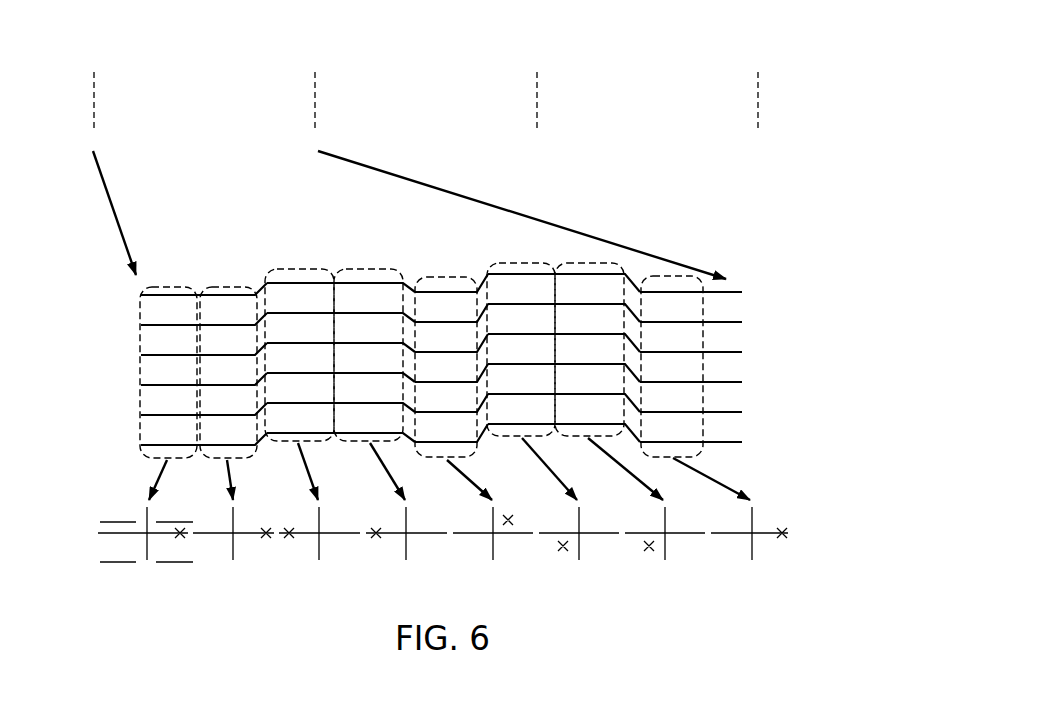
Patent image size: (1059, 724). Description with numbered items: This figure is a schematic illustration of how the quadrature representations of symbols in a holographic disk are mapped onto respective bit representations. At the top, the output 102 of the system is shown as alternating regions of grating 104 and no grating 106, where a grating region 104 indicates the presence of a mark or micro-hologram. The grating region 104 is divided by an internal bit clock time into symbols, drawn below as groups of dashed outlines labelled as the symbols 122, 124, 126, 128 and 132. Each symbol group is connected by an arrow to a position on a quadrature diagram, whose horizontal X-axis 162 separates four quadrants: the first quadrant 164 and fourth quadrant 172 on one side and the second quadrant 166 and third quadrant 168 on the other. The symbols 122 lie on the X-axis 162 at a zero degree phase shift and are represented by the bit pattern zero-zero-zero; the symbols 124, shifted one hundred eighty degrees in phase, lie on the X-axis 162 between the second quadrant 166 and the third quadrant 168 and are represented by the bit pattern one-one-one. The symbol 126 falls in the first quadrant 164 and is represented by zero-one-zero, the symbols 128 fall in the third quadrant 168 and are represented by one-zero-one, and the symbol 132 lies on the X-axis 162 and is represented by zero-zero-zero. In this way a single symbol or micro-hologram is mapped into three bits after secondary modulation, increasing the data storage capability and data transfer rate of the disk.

The output 102 is at (748, 24).
The grating region 104 is at (126, 63).
The no grating region 106 is at (348, 62).
The symbols 122 is at (210, 287).
The symbols 124 is at (347, 270).
The symbol 126 is at (445, 276).
The symbols 128 is at (572, 262).
The symbol 132 is at (672, 276).
The X-axis 162 is at (108, 533).
The first quadrant 164 is at (174, 510).
The second quadrant 166 is at (118, 510).
The third quadrant 168 is at (118, 550).
The fourth quadrant 172 is at (174, 550).